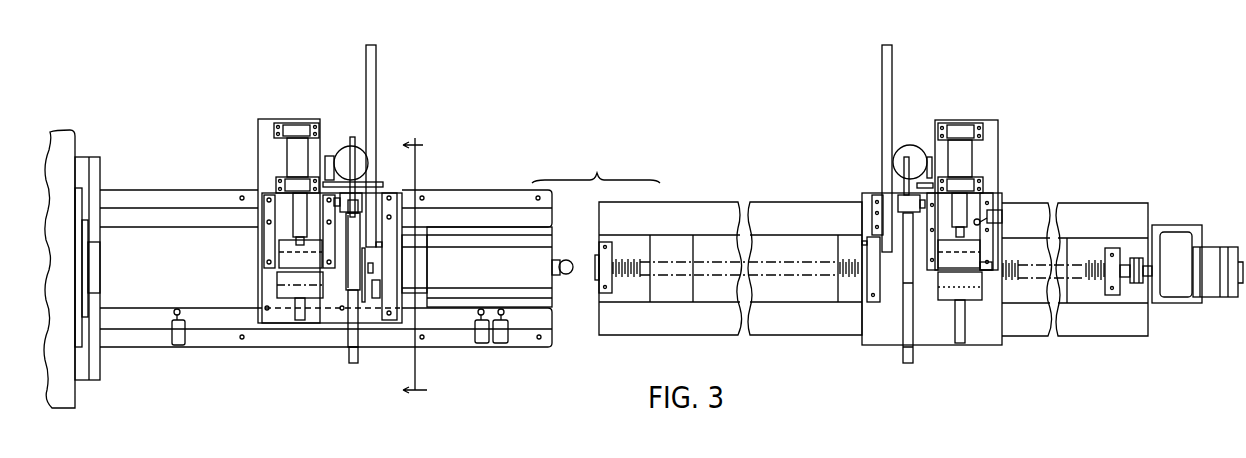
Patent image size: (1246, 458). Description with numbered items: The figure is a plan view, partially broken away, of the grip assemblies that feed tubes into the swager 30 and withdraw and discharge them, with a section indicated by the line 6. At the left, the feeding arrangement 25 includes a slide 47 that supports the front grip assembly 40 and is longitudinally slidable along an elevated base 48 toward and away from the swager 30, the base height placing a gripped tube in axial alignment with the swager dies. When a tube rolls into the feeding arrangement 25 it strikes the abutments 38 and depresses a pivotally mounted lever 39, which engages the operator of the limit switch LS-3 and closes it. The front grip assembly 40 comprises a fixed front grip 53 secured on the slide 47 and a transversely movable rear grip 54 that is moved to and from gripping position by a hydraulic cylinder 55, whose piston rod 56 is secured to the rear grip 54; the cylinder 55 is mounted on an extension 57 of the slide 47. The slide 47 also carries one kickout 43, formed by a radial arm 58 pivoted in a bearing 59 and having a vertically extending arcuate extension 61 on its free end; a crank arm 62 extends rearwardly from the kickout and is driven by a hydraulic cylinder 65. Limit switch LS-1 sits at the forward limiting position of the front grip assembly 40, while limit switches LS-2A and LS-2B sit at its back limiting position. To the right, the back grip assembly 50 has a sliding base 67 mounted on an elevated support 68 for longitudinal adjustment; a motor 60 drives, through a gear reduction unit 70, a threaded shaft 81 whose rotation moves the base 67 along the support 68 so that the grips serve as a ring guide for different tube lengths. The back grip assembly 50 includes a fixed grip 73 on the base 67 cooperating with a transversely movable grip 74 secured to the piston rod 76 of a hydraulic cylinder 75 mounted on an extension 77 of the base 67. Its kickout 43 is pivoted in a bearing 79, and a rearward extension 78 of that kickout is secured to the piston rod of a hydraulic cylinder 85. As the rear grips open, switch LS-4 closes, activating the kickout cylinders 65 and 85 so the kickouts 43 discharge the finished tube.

The swager 30 is at (68, 131).
The slide 47 is at (277, 322).
The front grip assembly 40 is at (262, 275).
The extension 57 is at (262, 127).
The hydraulic cylinder 55 is at (293, 147).
The piston rod 56 is at (293, 208).
The rear grip 54 is at (280, 253).
The front grip 53 is at (277, 288).
The crank arm 62 is at (352, 145).
The hydraulic cylinder 65 is at (335, 150).
The bearing 59 is at (355, 203).
The abutments 38 is at (373, 80).
The kickout 43 is at (353, 332).
The radial arm 58 is at (348, 260).
The arcuate extension 61 is at (358, 348).
The limit switch LS-3 is at (382, 279).
The elevated base 48 is at (498, 253).
The lever 39 is at (438, 248).
The limit switch LS-1 is at (177, 347).
The limit switch LS-2A is at (500, 343).
The limit switch LS-2B is at (485, 343).
The section line 6- 6 is at (423, 268).
The feeding arrangement 25 is at (597, 175).
The elevated support 68 is at (820, 323).
The sliding base 67 is at (883, 333).
The hydraulic cylinder 85 is at (907, 150).
The rearward extension 78 is at (905, 160).
The bearing 79 is at (907, 203).
The extension 77 is at (985, 128).
The hydraulic cylinder 75 is at (965, 157).
The piston rod 76 is at (967, 217).
The limit switch LS-4 is at (1007, 205).
The back grip assembly 50 is at (989, 262).
The movable grip 74 is at (950, 262).
The fixed grip 73 is at (950, 293).
The threaded shaft 81 is at (1088, 262).
The gear reduction unit 70 is at (1173, 232).
The motor 60 is at (1213, 250).